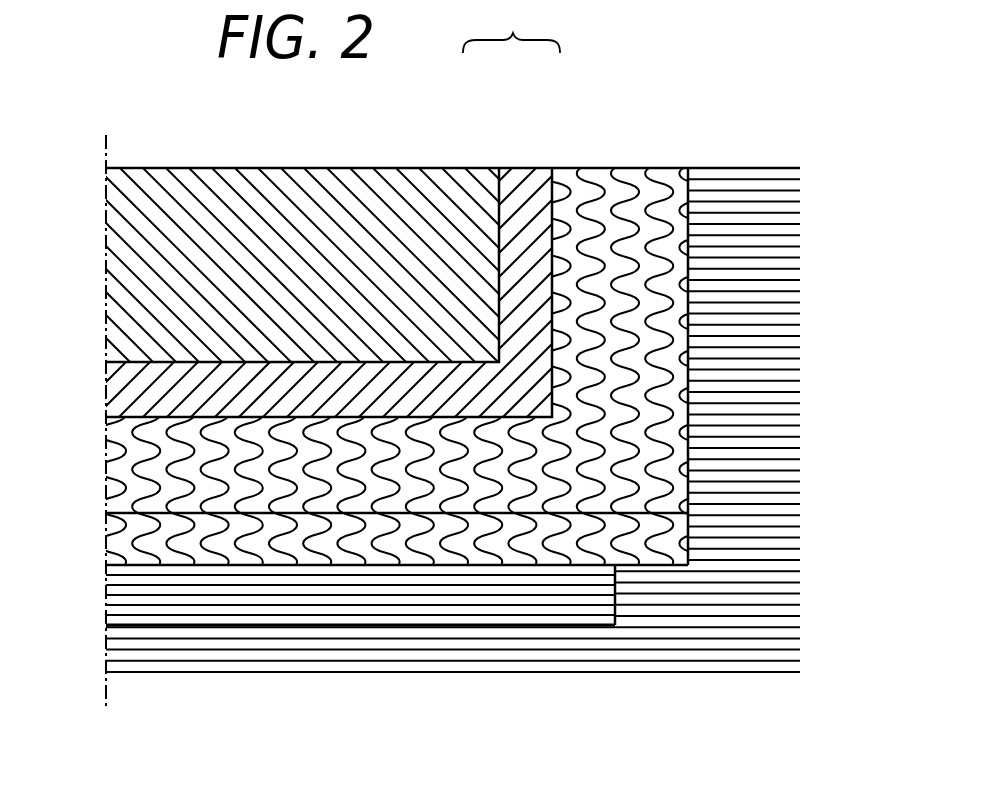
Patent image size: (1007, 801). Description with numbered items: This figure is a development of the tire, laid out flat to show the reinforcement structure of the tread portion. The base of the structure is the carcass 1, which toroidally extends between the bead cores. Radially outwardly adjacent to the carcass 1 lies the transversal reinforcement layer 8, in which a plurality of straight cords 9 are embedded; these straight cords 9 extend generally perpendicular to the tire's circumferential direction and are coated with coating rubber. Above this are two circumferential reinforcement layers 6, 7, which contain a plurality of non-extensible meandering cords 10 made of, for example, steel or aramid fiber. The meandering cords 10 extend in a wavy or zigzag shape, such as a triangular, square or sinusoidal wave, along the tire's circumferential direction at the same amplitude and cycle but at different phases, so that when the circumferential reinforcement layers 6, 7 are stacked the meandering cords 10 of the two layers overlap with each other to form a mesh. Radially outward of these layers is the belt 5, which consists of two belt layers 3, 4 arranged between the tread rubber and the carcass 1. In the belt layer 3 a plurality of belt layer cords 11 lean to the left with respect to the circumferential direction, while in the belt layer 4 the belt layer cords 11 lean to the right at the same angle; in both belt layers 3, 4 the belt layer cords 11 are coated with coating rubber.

The carcass 1 is at (733, 165).
The belt layer 3 is at (470, 154).
The belt layer 4 is at (537, 152).
The belt 5 is at (511, 28).
The circumferential reinforcement layer 6 is at (653, 380).
The circumferential reinforcement layer 7 is at (638, 555).
The transversal reinforcement layer 8 is at (524, 640).
The straight cords 9 is at (382, 600).
The meandering cords 10 is at (665, 310).
The belt layer cords 11 is at (210, 283).